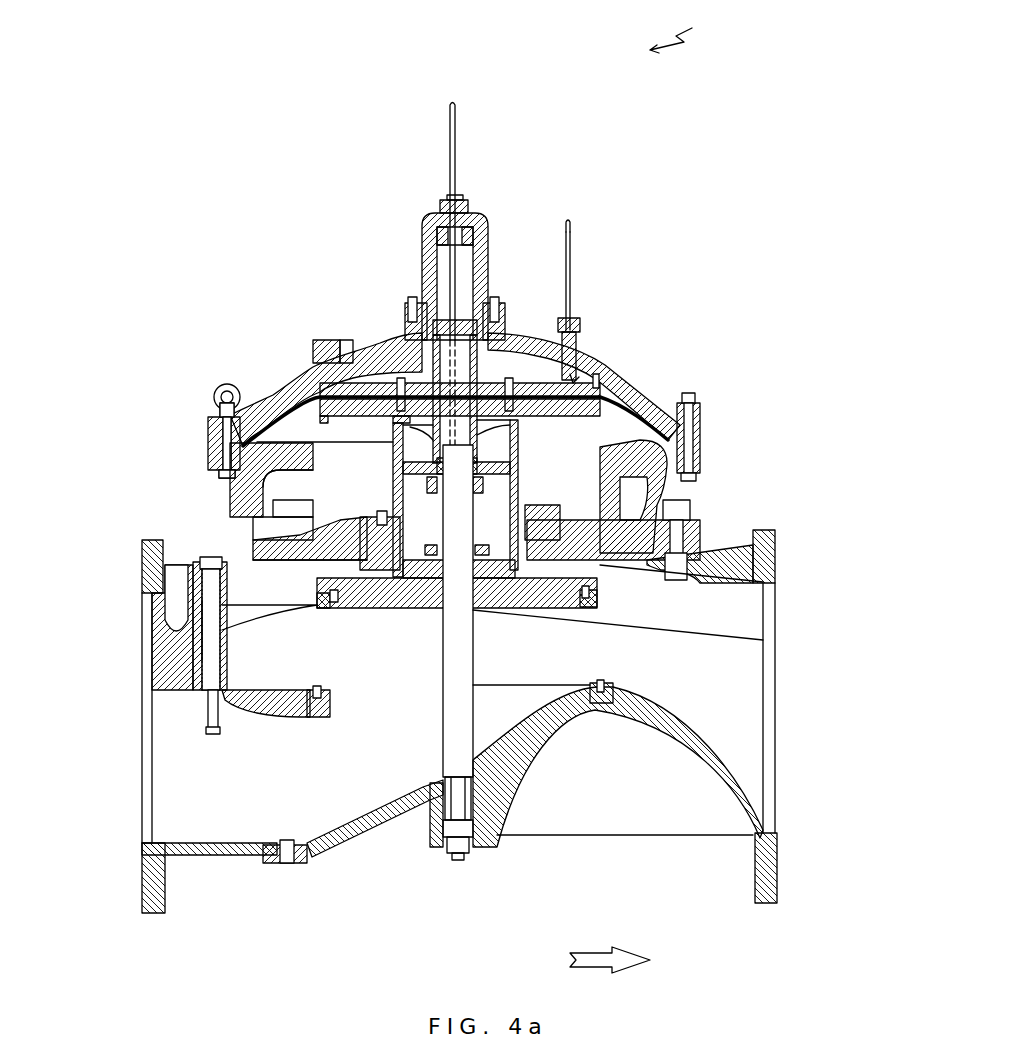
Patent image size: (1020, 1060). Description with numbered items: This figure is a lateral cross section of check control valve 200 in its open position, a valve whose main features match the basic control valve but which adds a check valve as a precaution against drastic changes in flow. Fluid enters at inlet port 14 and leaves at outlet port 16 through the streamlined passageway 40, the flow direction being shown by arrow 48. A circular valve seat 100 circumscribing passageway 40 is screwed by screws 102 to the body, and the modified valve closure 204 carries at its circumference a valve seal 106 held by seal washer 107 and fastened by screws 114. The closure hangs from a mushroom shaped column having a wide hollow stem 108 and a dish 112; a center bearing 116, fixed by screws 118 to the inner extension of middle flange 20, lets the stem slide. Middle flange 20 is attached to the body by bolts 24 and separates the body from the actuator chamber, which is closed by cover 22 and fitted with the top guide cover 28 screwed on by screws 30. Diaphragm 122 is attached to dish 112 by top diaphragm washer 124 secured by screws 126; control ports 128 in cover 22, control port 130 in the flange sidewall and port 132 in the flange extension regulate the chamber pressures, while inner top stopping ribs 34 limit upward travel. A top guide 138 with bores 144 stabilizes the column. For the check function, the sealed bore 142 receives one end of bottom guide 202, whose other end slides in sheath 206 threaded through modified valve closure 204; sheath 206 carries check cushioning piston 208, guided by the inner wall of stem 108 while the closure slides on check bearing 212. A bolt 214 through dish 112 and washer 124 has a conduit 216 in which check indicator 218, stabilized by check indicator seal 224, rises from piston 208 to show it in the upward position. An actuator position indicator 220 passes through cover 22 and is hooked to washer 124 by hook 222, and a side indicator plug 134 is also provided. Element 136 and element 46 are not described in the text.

The control valve 200 is at (685, 29).
The top guide cover 28 is at (482, 240).
The check indicator 218 is at (452, 205).
The bores 144 is at (464, 207).
The check indicator seal 224 is at (422, 215).
The top guide 138 is at (570, 222).
The actuator position indicator 220 is at (572, 265).
The hook 222 is at (578, 345).
The side indicator plug 134 is at (573, 383).
The inner top stopping ribs 34 is at (350, 343).
The screws 126 is at (377, 367).
The control ports 128 is at (345, 368).
The top diaphragm washer 124 is at (313, 367).
The screws 30 is at (416, 300).
The cover 22 is at (590, 395).
The conduit 216 is at (520, 420).
The bolt 214 is at (540, 440).
The dish 112 is at (307, 380).
The screws 118 is at (605, 500).
The stem 108 is at (293, 392).
The diaphragm 122 is at (393, 483).
The control port 130 is at (280, 517).
The center bearing 116 is at (263, 507).
The port 132 is at (345, 562).
The check cushioning piston 208 is at (548, 505).
The middle flange 20 is at (640, 507).
The bolts 24 is at (680, 515).
The modified valve closure 204 is at (605, 568).
The check bearing 212 is at (478, 611).
The bottom guide 202 is at (463, 650).
The sealed bore 142 is at (480, 835).
The inlet port 14 is at (145, 640).
The seal washer 107 is at (175, 648).
The bolt 136 is at (213, 730).
The screws 114 is at (205, 660).
The valve seal 106 is at (225, 690).
The valve seat 100 is at (425, 603).
The screws 102 is at (443, 610).
The sheath 206 is at (280, 850).
The body bottom wall 46 is at (297, 858).
The passageway 40 is at (376, 814).
The outlet port 16 is at (770, 747).
The arrow 48 is at (610, 950).